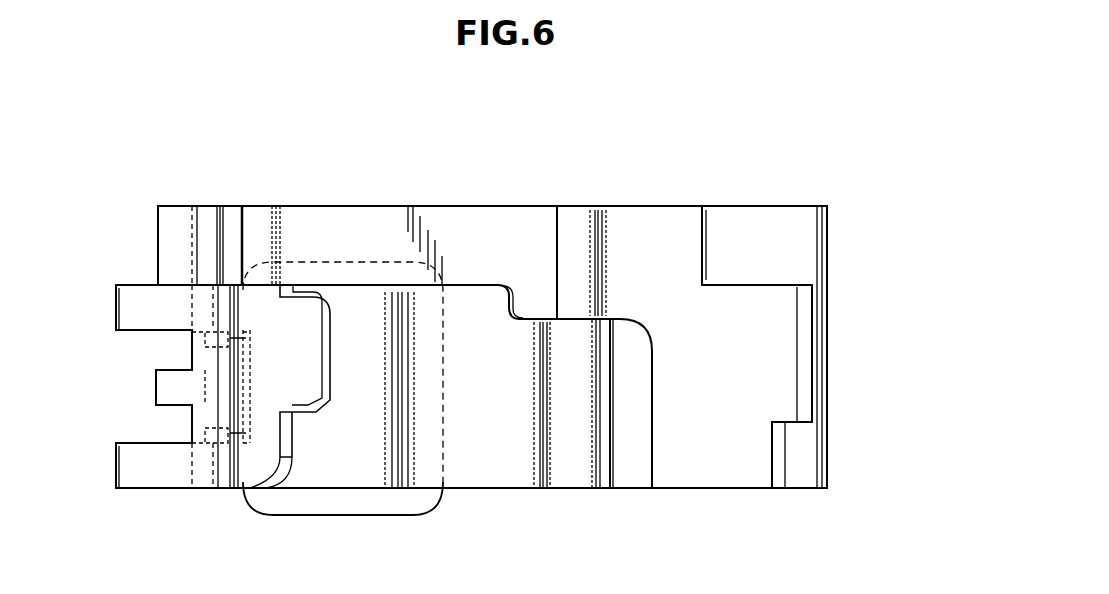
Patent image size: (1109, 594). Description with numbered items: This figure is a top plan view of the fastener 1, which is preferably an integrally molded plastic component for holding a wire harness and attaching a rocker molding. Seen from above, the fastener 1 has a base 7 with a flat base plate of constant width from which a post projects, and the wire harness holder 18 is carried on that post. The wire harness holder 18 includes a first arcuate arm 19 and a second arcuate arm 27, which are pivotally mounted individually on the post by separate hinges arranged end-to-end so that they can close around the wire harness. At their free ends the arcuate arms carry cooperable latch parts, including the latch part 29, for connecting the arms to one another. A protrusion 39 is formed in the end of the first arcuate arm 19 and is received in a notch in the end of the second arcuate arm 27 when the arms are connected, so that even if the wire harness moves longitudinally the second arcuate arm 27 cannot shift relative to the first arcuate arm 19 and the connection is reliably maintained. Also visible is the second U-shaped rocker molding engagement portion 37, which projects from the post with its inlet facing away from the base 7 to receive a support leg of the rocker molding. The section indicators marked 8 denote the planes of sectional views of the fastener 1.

The fastener 1 is at (745, 188).
The base 7 is at (356, 203).
The section line 8- 8 is at (158, 233).
The wire harness holder 18 is at (613, 142).
The first arcuate arm 19 is at (458, 310).
The second arcuate arm 27 is at (650, 245).
The latch part 29 is at (204, 212).
The second U-shaped rocker molding engagement portion 37 is at (603, 470).
The protrusion 39 is at (313, 325).